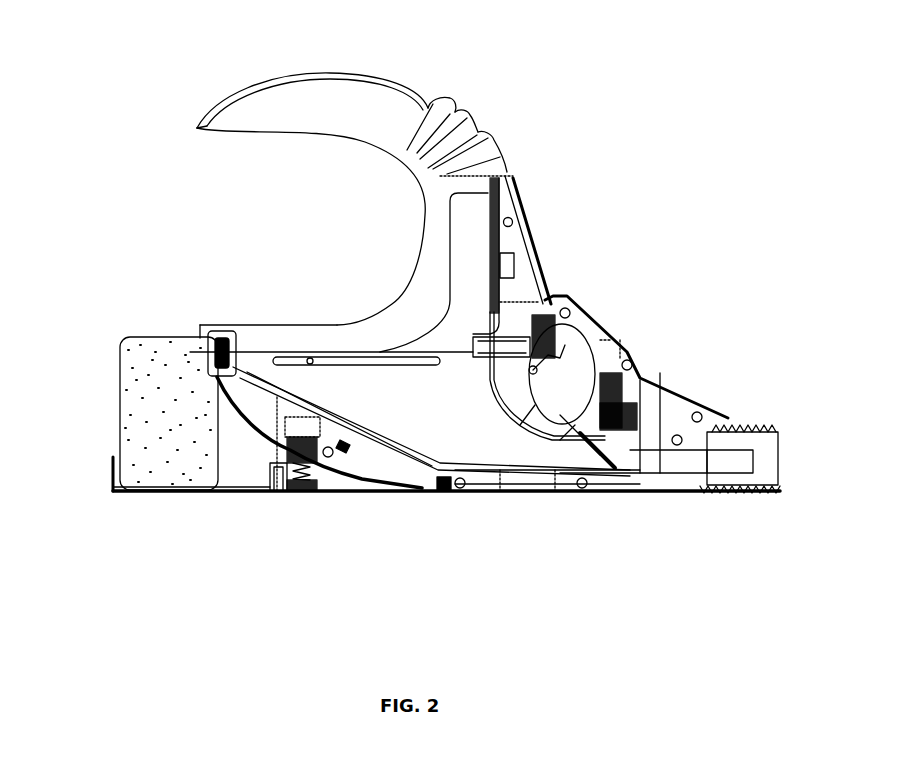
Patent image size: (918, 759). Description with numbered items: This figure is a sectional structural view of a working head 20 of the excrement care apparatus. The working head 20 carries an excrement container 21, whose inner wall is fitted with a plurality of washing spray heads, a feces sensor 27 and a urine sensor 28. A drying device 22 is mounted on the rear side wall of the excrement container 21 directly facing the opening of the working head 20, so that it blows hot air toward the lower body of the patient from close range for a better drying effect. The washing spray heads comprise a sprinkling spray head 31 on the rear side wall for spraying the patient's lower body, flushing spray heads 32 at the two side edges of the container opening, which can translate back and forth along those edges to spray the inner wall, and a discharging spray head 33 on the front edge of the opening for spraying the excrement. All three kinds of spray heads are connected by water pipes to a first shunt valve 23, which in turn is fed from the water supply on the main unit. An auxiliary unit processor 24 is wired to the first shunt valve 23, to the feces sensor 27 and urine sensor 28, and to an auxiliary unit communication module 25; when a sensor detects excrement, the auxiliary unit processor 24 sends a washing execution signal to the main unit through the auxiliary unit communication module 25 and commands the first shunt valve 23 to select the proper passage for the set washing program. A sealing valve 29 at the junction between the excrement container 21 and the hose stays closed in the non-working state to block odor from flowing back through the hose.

The working head 20 is at (432, 168).
The excrement container 21 is at (280, 325).
The drying device 22 is at (553, 352).
The first shunt valve 23 is at (637, 395).
The auxiliary unit processor 24 is at (200, 350).
The auxiliary unit communication module 25 is at (377, 447).
The feces sensor 27 is at (442, 470).
The urine sensor 28 is at (317, 493).
The sealing valve 29 is at (598, 462).
The sprinkling spray head 31 is at (500, 250).
The flushing spray heads 32 is at (300, 350).
The discharging spray head 33 is at (222, 356).